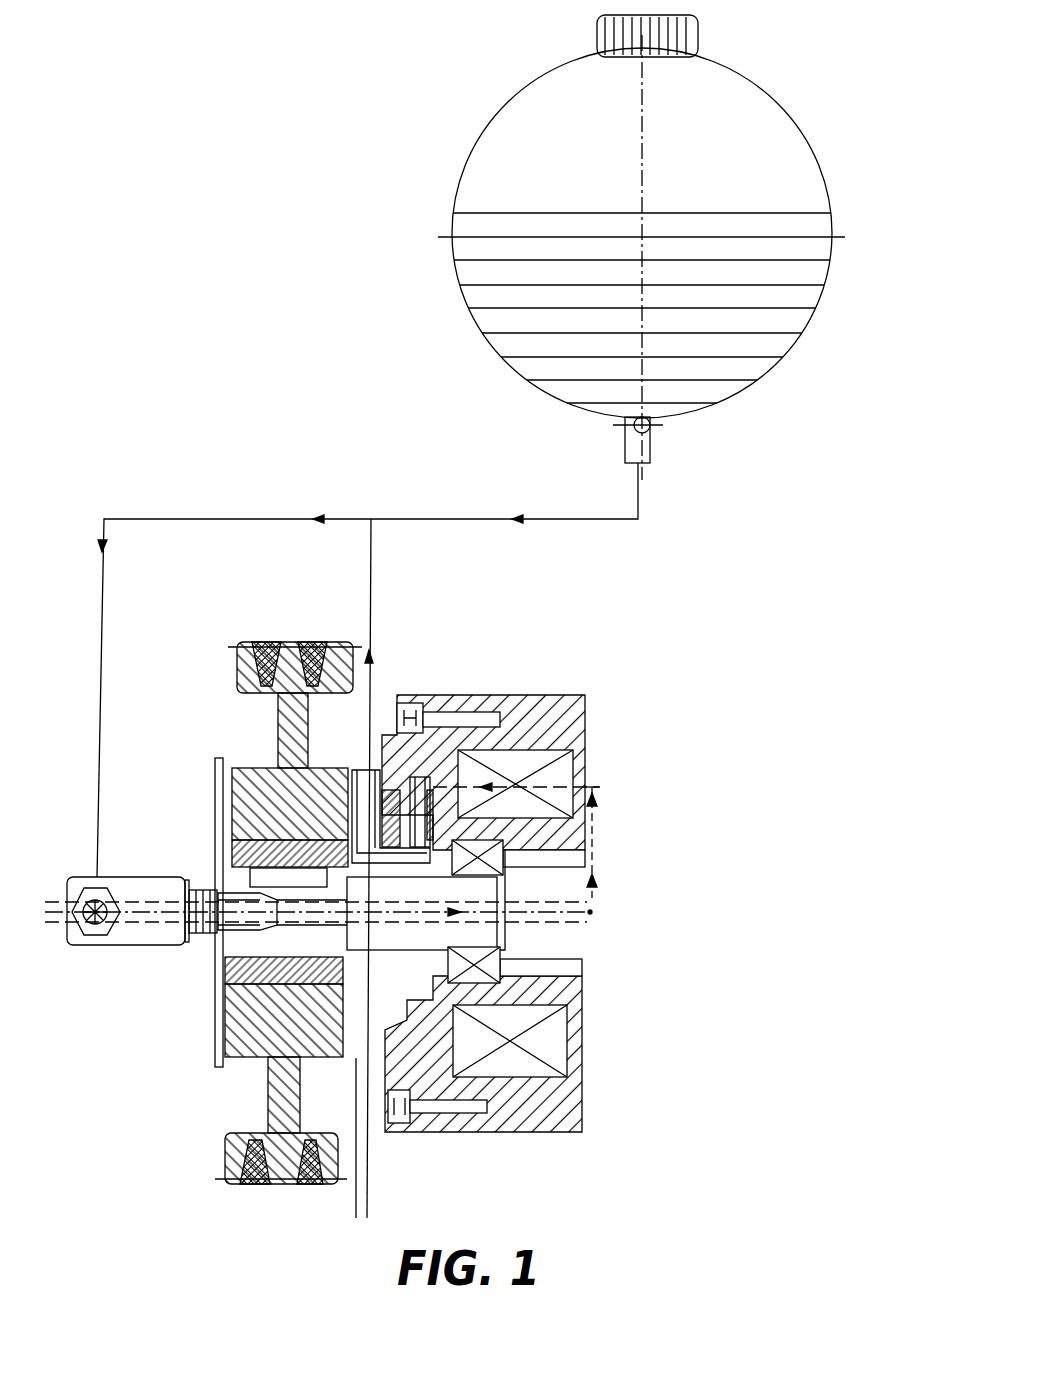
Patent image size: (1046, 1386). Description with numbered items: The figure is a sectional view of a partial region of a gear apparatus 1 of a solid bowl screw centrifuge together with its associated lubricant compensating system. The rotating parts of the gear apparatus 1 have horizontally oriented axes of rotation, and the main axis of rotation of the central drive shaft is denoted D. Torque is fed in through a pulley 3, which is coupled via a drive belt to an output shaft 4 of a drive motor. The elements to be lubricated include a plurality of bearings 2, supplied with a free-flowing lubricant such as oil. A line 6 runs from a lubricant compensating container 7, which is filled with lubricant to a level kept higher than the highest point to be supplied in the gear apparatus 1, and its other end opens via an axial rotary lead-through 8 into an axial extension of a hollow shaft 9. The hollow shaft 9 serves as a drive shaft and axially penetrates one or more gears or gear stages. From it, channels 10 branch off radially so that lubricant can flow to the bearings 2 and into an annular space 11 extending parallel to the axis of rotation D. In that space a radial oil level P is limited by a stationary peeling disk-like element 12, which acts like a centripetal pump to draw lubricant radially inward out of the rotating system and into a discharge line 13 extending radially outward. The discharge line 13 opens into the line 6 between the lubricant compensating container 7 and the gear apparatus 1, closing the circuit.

The gear apparatus 1 is at (450, 668).
The bearings 2 is at (575, 784).
The pulley 3 is at (252, 929).
The output shaft 4 is at (493, 697).
The line 6 is at (465, 517).
The lubricant compensating container 7 is at (763, 373).
The axial rotary lead-through 8 is at (95, 920).
The hollow shaft 9 is at (300, 928).
The channels 10 is at (592, 898).
The annular space 11 is at (455, 775).
The peeling disk-like element 12 is at (381, 737).
The discharge line 13 is at (372, 555).
The radial oil level P is at (450, 777).
The axis of rotation D is at (57, 912).